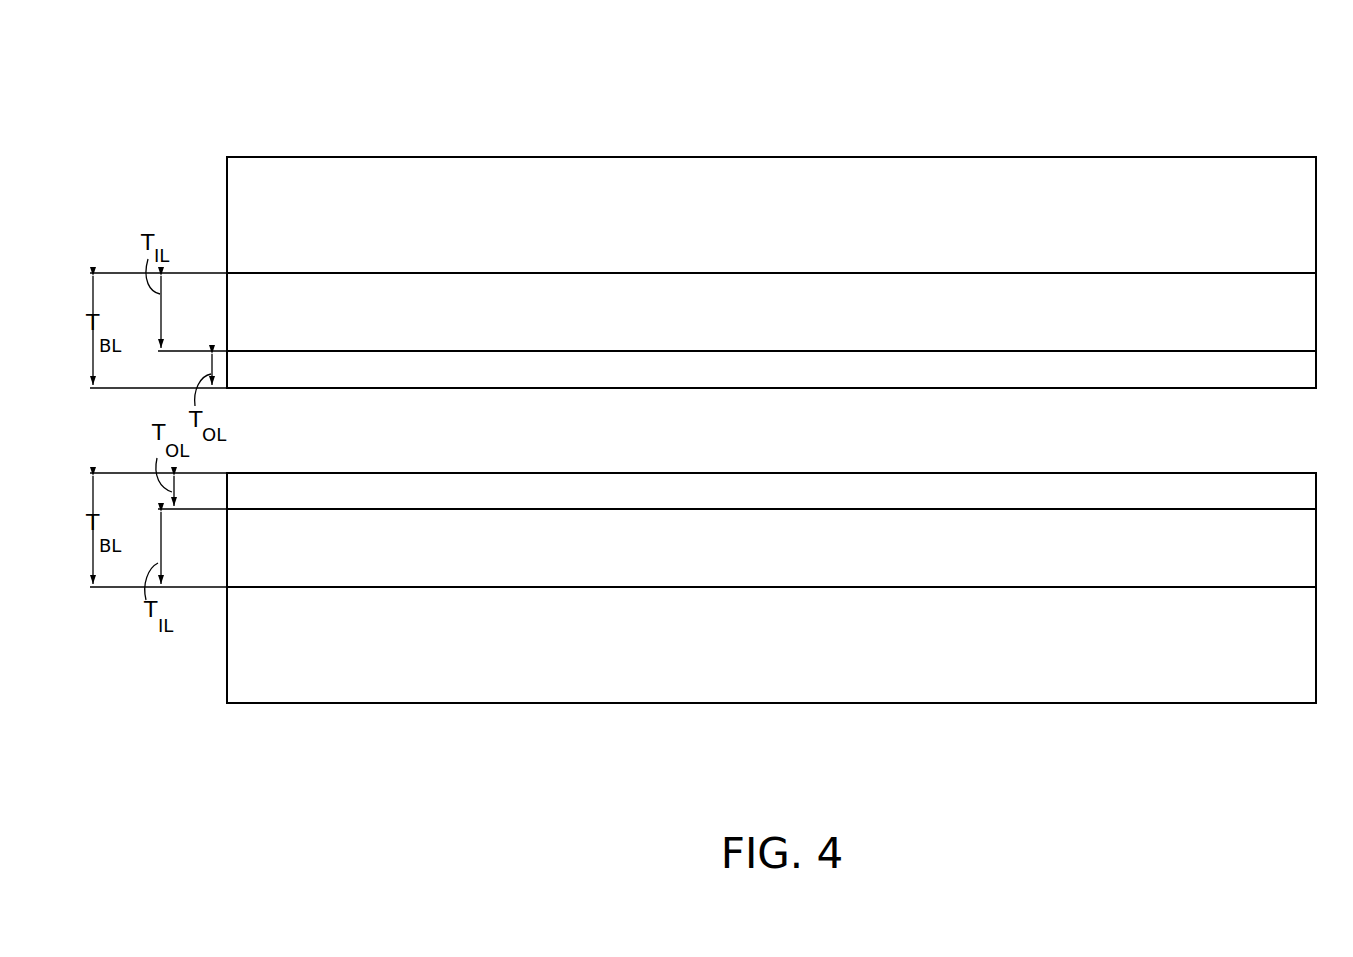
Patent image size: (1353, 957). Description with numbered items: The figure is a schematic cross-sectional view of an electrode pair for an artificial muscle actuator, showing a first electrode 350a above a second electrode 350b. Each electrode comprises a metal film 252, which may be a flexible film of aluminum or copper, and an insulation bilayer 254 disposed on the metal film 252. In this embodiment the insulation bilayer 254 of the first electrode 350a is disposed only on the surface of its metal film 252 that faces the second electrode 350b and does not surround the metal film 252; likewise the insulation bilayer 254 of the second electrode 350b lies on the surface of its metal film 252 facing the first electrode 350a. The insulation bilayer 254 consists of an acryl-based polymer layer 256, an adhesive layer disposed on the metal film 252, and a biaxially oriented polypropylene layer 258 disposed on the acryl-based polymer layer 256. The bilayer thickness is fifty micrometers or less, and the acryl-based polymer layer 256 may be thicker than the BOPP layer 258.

The metal film 252 is at (938, 193).
The insulation bilayer 254 is at (788, 155).
The acryl-based polymer layer 256 is at (1002, 328).
The biaxially oriented polypropylene (BOPP) layer 258 is at (933, 381).
The first electrode 350a is at (1264, 155).
The second electrode 350b is at (1263, 705).